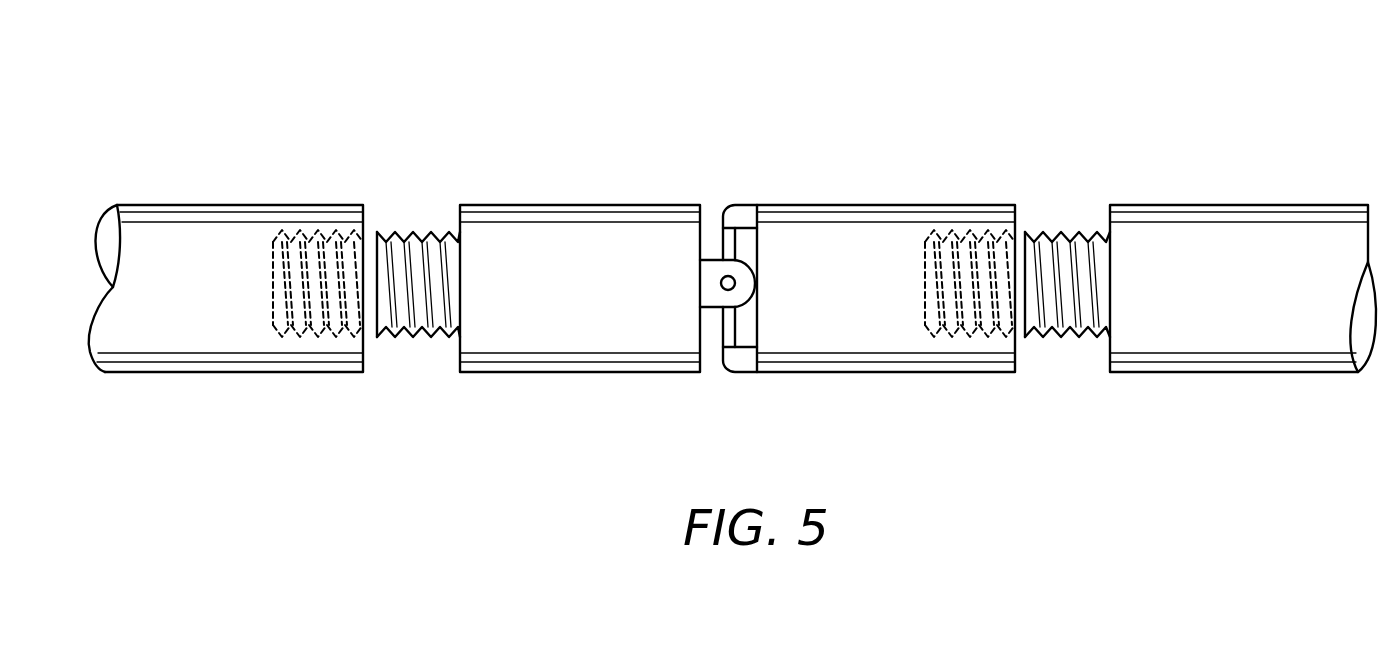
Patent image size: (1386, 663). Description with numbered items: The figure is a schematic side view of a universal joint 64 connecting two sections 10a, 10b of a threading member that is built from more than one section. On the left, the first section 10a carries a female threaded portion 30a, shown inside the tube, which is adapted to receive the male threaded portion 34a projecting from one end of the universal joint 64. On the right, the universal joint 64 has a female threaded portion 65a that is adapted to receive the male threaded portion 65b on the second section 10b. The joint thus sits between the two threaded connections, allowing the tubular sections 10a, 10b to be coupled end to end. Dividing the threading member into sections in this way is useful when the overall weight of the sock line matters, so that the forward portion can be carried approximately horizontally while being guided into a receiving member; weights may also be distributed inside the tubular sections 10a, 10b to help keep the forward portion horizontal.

The section of threading member 10a is at (247, 305).
The section of threading member 10b is at (1262, 307).
The female threaded portion 30a is at (322, 232).
The male threaded portion 34a is at (397, 232).
The universal joint 64 is at (666, 195).
The female threaded portion 65a is at (968, 337).
The male threaded portion 65b is at (1078, 232).